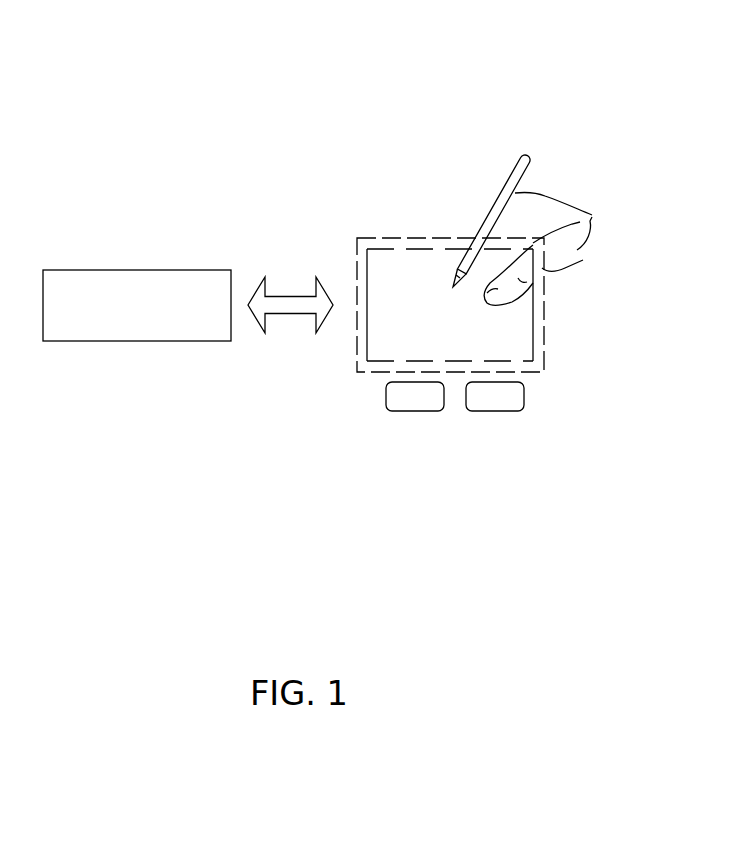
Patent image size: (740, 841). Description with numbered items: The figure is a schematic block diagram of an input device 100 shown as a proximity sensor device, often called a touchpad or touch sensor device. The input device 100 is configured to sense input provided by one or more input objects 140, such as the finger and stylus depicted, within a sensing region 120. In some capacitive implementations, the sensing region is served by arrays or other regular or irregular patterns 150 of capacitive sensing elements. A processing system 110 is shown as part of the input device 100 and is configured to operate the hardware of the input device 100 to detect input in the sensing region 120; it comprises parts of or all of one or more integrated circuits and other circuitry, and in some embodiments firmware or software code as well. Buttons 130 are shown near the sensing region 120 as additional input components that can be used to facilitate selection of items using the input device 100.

The input device 100 is at (283, 99).
The processing system 110 is at (120, 270).
The sensing region 120 is at (545, 319).
The buttons 130 is at (419, 411).
The input objects 140 is at (597, 209).
The patterns of capacitive sensing elements 150 is at (402, 248).